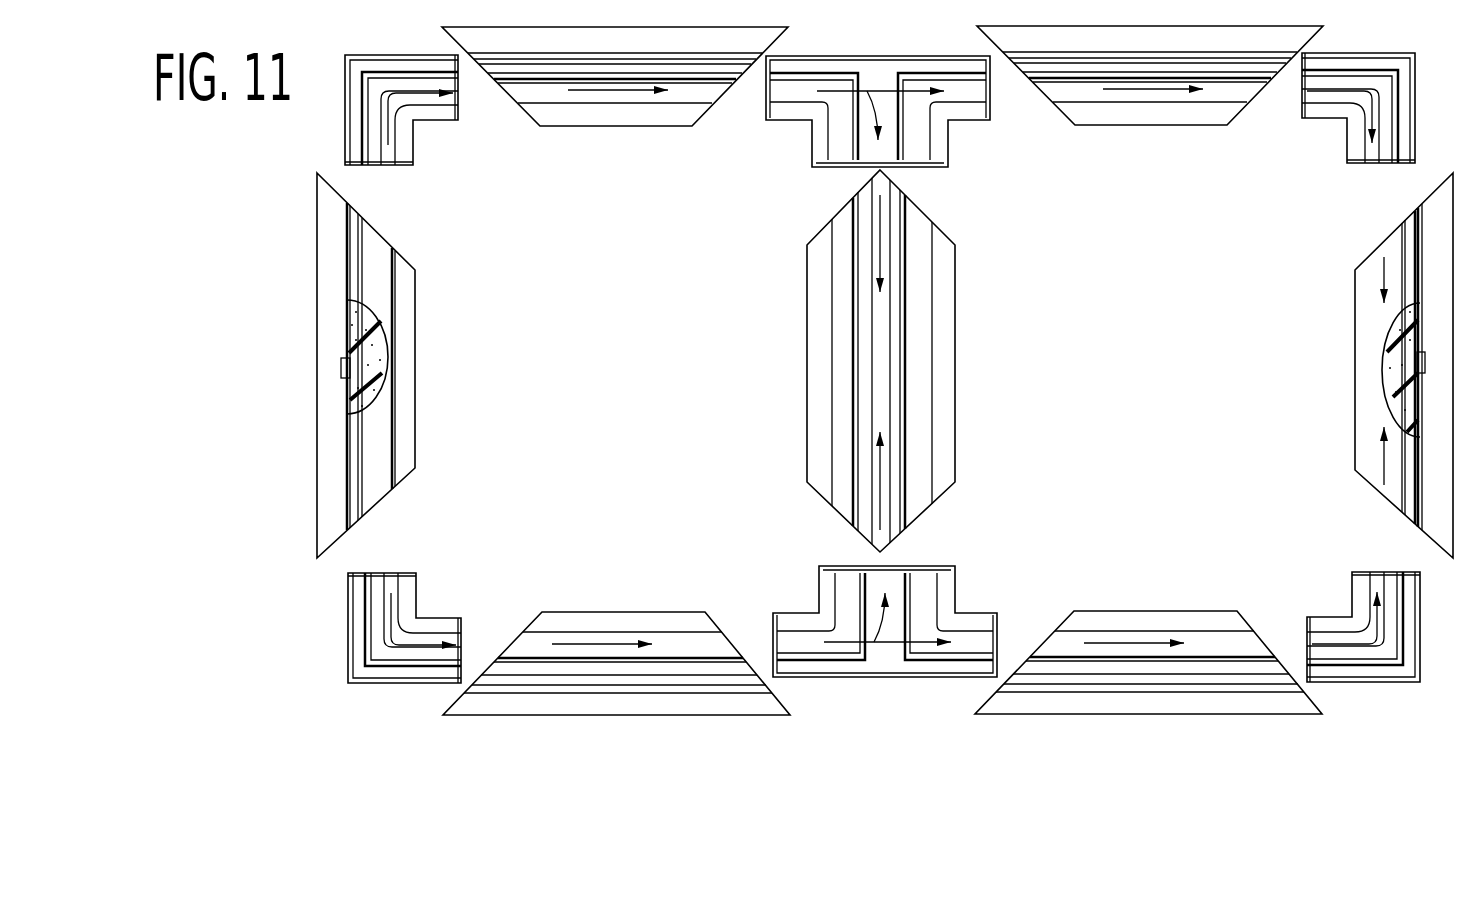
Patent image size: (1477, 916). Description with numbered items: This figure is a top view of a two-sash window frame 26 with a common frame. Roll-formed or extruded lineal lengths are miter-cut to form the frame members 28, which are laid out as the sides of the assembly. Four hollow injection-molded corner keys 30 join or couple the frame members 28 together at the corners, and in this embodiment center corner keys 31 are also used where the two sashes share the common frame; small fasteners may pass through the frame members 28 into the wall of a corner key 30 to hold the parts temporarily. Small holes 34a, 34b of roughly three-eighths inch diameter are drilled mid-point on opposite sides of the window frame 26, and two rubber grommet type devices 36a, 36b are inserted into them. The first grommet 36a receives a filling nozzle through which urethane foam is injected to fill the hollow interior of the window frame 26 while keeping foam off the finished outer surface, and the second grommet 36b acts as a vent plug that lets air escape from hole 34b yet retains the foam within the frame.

The window frame 26 is at (316, 622).
The frame members 28 is at (608, 126).
The corner keys 30 is at (1358, 53).
The center corner keys 31 is at (848, 57).
The small hole 34a is at (347, 385).
The small hole 34b is at (1418, 376).
The first grommet 36a is at (341, 362).
The second grommet 36b is at (1425, 363).